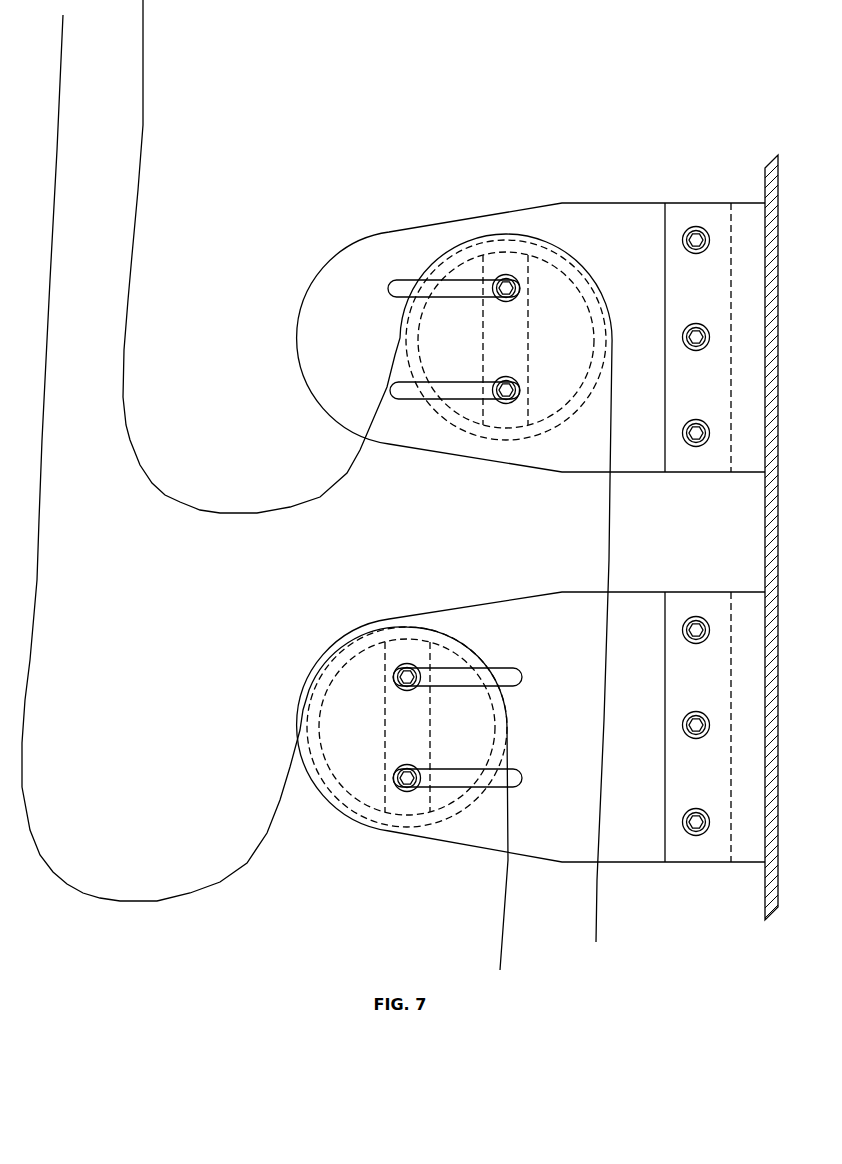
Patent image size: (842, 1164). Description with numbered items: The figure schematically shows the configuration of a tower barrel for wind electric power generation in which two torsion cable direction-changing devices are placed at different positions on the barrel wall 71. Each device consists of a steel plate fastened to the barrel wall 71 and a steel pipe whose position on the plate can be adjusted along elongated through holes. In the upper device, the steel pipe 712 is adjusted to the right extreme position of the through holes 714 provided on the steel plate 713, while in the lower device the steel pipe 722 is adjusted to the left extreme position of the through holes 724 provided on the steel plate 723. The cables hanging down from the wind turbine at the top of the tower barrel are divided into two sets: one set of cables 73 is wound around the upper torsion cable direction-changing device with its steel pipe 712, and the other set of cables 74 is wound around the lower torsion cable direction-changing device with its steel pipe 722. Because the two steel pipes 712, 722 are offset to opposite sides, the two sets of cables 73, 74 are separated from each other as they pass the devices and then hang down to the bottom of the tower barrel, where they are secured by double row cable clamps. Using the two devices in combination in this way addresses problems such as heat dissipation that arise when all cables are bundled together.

The barrel wall 71 is at (765, 172).
The one set of cables 73 is at (141, 125).
The other set of cables 74 is at (39, 552).
The steel pipe 712 is at (575, 413).
The steel plate 713 is at (560, 203).
The through holes 714 is at (400, 279).
The steel pipe 722 is at (482, 798).
The steel plate 723 is at (560, 592).
The through holes 724 is at (507, 668).